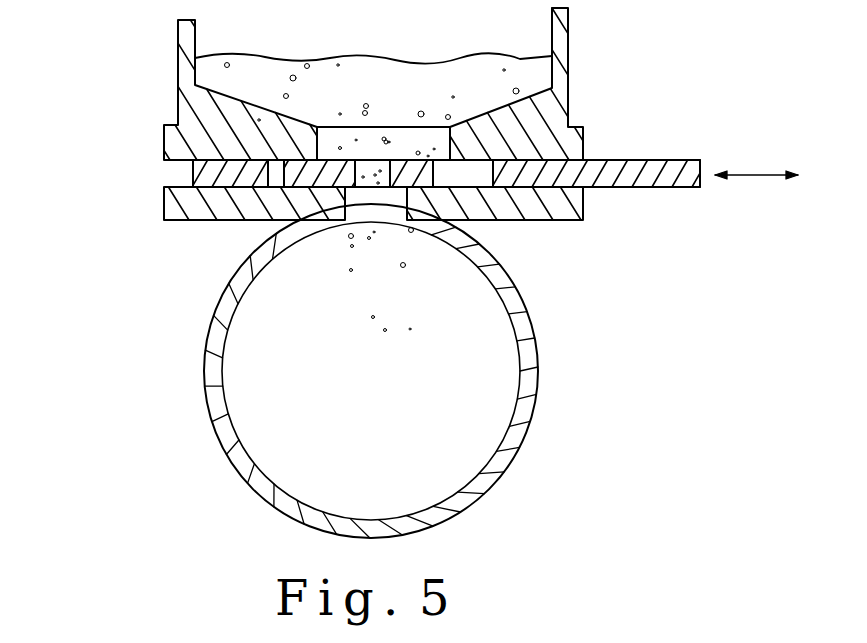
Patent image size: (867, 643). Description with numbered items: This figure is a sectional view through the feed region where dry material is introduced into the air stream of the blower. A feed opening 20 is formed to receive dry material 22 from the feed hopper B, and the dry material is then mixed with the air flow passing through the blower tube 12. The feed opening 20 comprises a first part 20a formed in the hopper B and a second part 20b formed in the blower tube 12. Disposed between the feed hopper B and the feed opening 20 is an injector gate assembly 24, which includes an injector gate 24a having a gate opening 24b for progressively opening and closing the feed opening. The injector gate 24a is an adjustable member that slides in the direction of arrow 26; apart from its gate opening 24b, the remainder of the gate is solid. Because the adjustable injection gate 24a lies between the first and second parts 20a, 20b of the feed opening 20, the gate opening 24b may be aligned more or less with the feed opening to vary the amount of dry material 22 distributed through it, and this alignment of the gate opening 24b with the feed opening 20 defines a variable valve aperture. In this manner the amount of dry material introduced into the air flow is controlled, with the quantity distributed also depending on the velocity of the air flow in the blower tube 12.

The blower tube 12 is at (448, 371).
The feed opening 20 is at (324, 246).
The first part of feed opening 20a is at (412, 82).
The second part of feed opening 20b is at (400, 319).
The dry material 22 is at (247, 82).
The injector gate assembly 24 is at (475, 134).
The injector gate 24a is at (693, 158).
The gate opening 24b is at (345, 190).
The arrow 26 is at (756, 228).
The feed hopper B is at (586, 86).